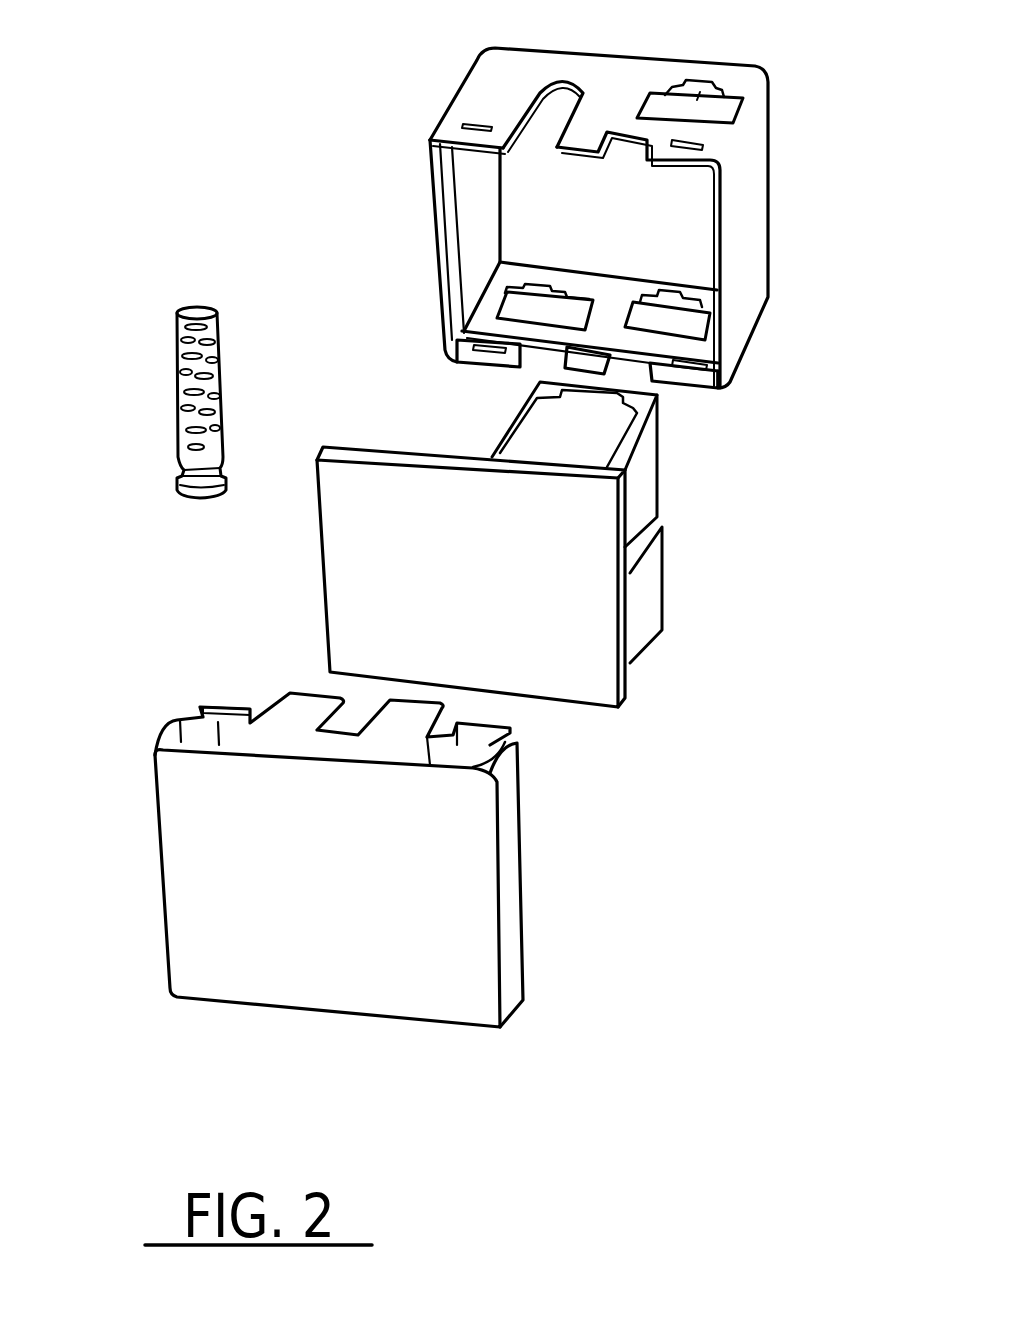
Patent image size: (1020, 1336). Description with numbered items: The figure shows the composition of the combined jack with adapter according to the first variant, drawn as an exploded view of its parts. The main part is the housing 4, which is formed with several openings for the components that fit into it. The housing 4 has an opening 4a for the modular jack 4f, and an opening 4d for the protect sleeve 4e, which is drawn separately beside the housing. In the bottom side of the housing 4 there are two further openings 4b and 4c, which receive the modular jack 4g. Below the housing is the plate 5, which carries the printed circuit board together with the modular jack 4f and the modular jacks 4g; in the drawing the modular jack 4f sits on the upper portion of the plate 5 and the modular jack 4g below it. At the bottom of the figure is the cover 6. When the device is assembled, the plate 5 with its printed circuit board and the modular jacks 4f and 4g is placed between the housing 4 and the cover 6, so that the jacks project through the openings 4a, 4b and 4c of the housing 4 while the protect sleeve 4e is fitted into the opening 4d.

The housing 4 is at (748, 240).
The opening 4a is at (700, 95).
The opening 4b is at (700, 318).
The opening 4c is at (553, 315).
The opening 4d is at (548, 98).
The protect sleeve 4e is at (178, 450).
The modular jack 4f is at (645, 477).
The modular jack 4g is at (645, 585).
The plate 5 is at (551, 566).
The cover 6 is at (513, 866).